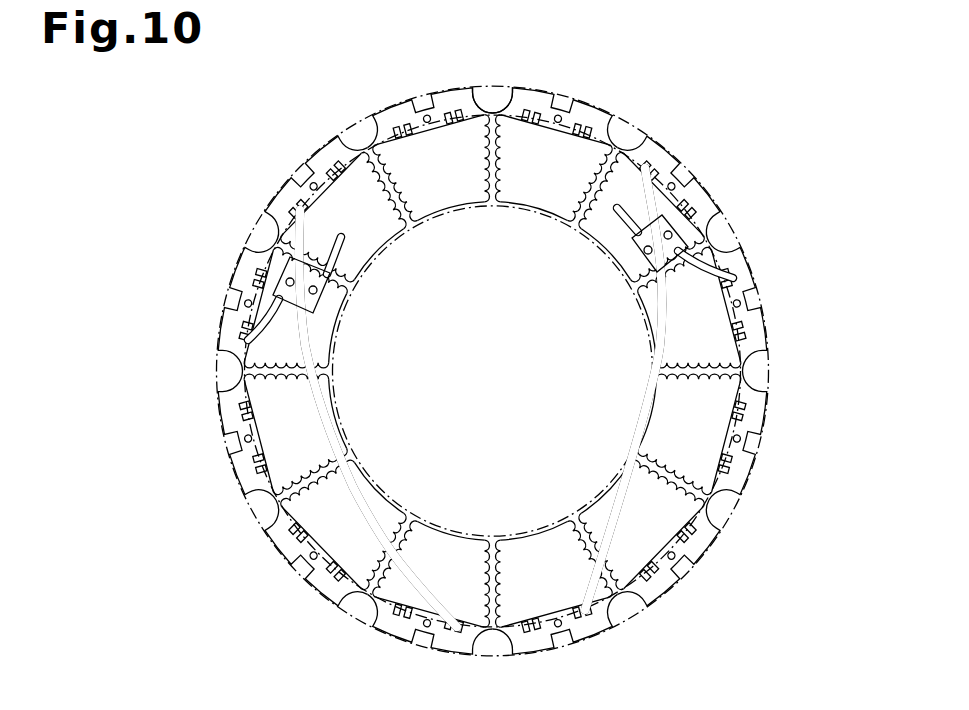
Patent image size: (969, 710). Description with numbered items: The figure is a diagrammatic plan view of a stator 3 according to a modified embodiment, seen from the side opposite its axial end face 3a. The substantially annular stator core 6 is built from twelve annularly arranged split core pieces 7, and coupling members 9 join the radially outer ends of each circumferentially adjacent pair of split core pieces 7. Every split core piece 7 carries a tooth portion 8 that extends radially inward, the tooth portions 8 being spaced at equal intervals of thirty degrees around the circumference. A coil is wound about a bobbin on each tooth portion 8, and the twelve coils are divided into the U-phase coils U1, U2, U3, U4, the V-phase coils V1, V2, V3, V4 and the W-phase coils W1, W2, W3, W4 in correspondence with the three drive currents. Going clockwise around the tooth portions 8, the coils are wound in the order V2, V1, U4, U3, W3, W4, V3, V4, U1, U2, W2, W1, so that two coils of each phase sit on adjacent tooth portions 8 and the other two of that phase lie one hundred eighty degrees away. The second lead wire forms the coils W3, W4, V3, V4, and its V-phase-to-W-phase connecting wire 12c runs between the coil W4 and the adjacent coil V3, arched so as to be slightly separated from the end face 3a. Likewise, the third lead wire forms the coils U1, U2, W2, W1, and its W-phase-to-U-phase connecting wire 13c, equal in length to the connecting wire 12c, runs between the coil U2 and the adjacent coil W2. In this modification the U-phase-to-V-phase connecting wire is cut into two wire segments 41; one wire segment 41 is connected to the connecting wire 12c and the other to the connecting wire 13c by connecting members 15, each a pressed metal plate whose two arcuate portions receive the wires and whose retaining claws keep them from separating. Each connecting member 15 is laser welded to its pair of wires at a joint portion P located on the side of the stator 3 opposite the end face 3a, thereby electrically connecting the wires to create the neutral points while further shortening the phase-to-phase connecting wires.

The stator 3 is at (488, 356).
The end face 3a is at (660, 142).
The stator core 6 is at (592, 134).
The split core piece 7 is at (447, 98).
The tooth portion 8 is at (645, 356).
The coupling member 9 is at (491, 98).
The connecting member 15 is at (289, 270).
The wire segment 41 is at (318, 397).
The joint portion P is at (322, 290).
The V-phase-to-W-phase connecting wire 12c is at (250, 311).
The W-phase-to-U-phase connecting wire 13c is at (738, 275).
The U-phase coil U1 is at (553, 192).
The U-phase coil U2 is at (615, 272).
The U-phase coil U3 is at (383, 490).
The U-phase coil U4 is at (441, 547).
The V-phase coil V1 is at (522, 552).
The V-phase coil V2 is at (602, 498).
The V-phase coil V3 is at (378, 232).
The V-phase coil V4 is at (462, 186).
The W-phase coil W1 is at (640, 410).
The W-phase coil W2 is at (634, 325).
The W-phase coil W3 is at (330, 420).
The W-phase coil W4 is at (348, 320).